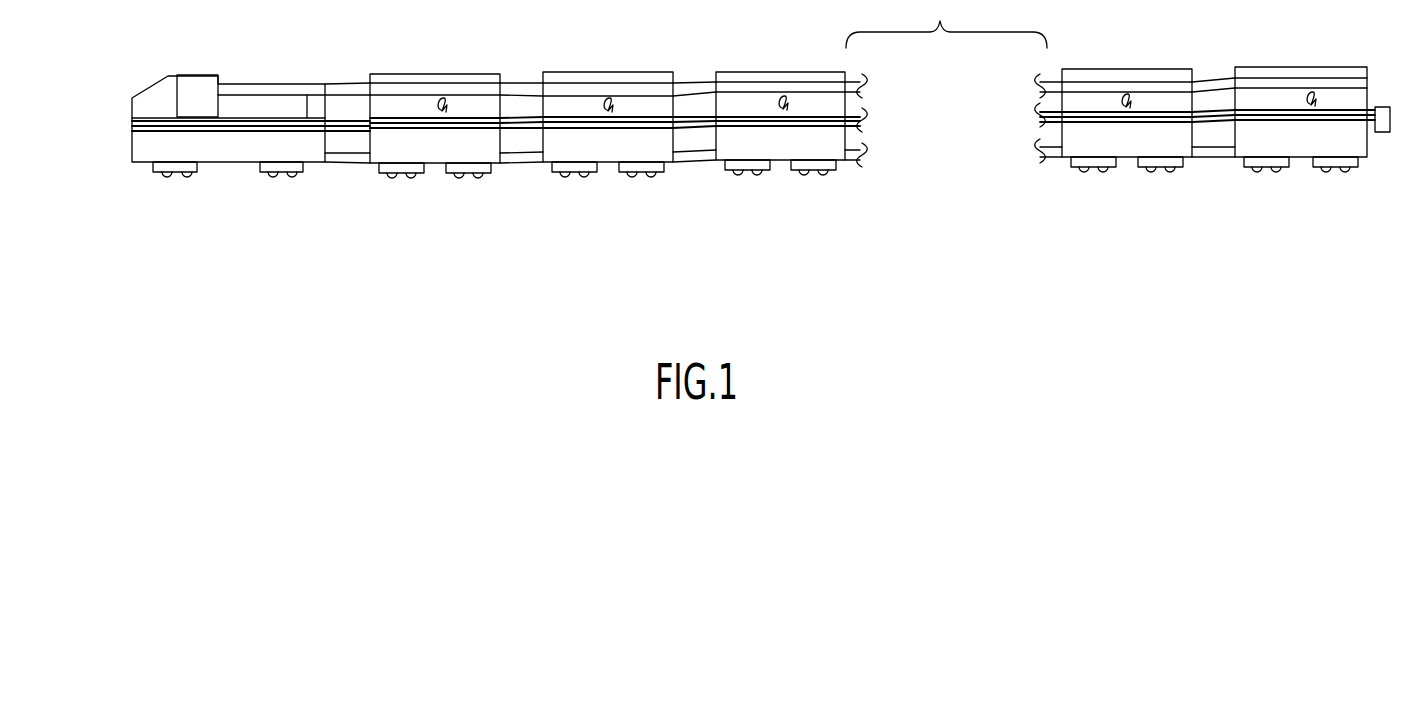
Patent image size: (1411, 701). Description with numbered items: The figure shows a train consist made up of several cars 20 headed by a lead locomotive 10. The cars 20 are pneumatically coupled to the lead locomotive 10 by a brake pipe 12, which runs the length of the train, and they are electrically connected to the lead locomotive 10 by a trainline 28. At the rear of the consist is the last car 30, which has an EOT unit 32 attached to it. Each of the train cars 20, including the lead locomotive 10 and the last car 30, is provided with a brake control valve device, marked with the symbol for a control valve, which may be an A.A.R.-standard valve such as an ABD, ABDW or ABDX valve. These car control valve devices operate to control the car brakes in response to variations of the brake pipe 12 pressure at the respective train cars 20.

The lead locomotive 10 is at (197, 76).
The brake pipe 12 is at (298, 97).
The cars 20 is at (440, 74).
The trainline 28 is at (263, 70).
The last car 30 is at (1303, 67).
The EOT unit 32 is at (1387, 107).